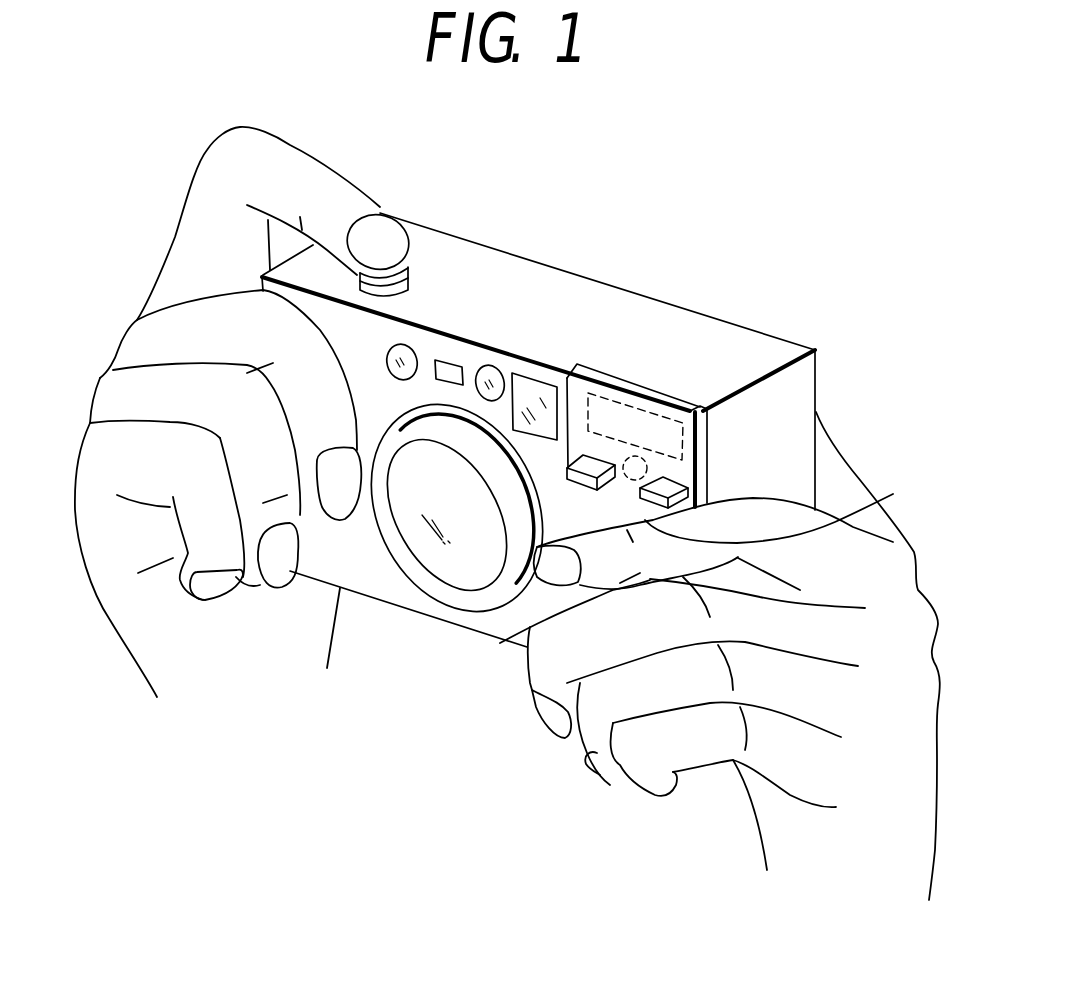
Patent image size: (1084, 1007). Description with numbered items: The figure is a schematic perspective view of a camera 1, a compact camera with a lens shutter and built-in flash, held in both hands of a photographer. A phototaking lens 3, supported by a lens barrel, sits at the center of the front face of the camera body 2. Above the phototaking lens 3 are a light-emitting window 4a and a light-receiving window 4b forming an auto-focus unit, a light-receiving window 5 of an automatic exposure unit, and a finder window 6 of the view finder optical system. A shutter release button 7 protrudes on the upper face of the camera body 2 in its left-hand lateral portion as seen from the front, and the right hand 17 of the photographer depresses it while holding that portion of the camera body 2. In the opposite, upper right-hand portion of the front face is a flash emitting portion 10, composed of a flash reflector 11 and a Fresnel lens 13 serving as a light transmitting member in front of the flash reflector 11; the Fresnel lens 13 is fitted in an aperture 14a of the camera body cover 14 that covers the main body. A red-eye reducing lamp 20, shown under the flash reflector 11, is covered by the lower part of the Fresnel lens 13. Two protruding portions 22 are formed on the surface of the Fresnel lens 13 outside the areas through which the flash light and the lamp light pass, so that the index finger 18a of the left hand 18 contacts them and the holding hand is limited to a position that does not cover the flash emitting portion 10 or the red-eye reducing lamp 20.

The camera 1 is at (728, 246).
The camera body 2 is at (497, 258).
The phototaking lens 3 is at (443, 558).
The light-emitting window 4a is at (403, 355).
The light-receiving window 4b is at (490, 367).
The light-receiving window 5 is at (450, 358).
The finder window 6 is at (523, 373).
The shutter release button 7 is at (358, 272).
The flash emitting portion 10 is at (693, 403).
The flash reflector 11 is at (645, 397).
The Fresnel lens 13 is at (707, 437).
The camera body cover 14 is at (500, 623).
The aperture 14a is at (590, 465).
The right hand 17 is at (150, 635).
The left hand 18 is at (720, 656).
The index finger 18a is at (738, 505).
The red-eye reducing lamp 20 is at (627, 478).
The protruding portions 22 is at (645, 412).